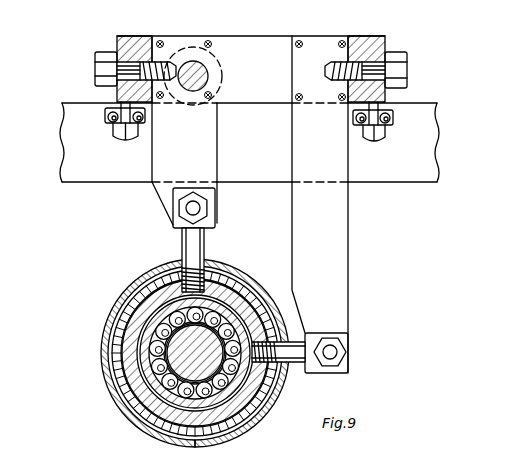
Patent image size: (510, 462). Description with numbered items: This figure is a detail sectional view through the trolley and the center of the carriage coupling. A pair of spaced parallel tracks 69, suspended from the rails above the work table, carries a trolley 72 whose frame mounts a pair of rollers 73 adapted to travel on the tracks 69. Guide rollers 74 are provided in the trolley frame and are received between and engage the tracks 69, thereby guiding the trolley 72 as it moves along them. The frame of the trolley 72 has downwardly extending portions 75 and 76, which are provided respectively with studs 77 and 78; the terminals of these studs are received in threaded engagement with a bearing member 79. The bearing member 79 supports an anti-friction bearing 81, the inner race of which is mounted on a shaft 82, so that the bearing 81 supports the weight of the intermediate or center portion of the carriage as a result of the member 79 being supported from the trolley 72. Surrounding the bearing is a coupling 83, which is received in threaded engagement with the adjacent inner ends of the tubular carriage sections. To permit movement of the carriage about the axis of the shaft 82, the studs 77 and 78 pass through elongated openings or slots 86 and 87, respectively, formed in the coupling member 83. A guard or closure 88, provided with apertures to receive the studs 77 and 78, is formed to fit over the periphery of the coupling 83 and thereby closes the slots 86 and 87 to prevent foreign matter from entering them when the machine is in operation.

The tracks 69 is at (435, 182).
The trolley 72 is at (417, 65).
The rollers 73 is at (186, 47).
The guide rollers 74 is at (105, 116).
The downwardly extending portion 75 is at (163, 190).
The downwardly extending portion 76 is at (348, 248).
The stud 77 is at (206, 241).
The stud 78 is at (300, 374).
The bearing member 79 is at (132, 385).
The anti-friction bearing 81 is at (152, 368).
The shaft 82 is at (178, 352).
The coupling 83 is at (108, 321).
The slot 86 is at (170, 260).
The slot 87 is at (275, 400).
The guard 88 is at (246, 276).